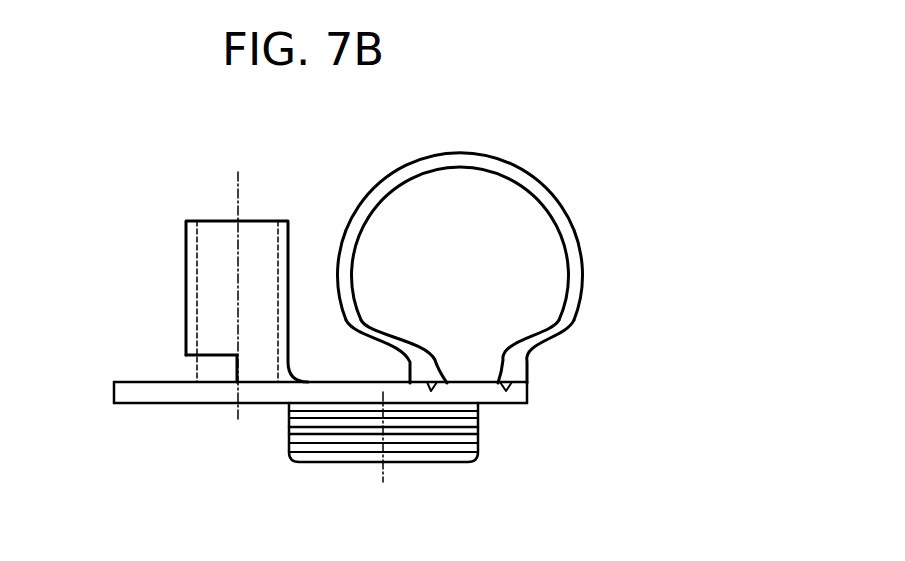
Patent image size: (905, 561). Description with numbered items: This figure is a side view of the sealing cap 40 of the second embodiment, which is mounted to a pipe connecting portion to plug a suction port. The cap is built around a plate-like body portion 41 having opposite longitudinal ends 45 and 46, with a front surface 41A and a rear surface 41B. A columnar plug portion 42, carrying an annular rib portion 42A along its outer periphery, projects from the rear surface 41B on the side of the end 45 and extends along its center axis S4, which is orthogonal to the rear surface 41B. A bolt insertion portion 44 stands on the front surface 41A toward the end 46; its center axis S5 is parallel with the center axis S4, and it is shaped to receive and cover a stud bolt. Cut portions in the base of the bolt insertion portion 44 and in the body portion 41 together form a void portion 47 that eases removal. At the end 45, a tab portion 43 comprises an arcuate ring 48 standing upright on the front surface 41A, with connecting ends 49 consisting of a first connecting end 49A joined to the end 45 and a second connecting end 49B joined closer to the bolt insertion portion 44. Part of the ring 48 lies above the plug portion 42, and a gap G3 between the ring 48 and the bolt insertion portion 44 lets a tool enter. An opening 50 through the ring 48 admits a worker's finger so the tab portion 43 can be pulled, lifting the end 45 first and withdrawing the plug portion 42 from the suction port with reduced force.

The sealing cap 40 is at (535, 119).
The plate-like body portion 41 is at (141, 412).
The front surface 41A is at (357, 382).
The rear surface 41B is at (507, 404).
The plug portion 42 is at (323, 462).
The annular rib portion 42A is at (283, 442).
The tab portion 43 is at (552, 167).
The bolt insertion portion 44 is at (186, 252).
The end 45 is at (528, 397).
The end 46 is at (113, 393).
The void portion 47 is at (212, 367).
The ring 48 is at (453, 158).
The connecting ends 49 is at (515, 306).
The first connecting end 49A is at (500, 382).
The second connecting end 49B is at (437, 382).
The opening 50 is at (467, 240).
The center axis S4 is at (387, 450).
The center axis S5 is at (240, 282).
The gap G3 is at (315, 262).